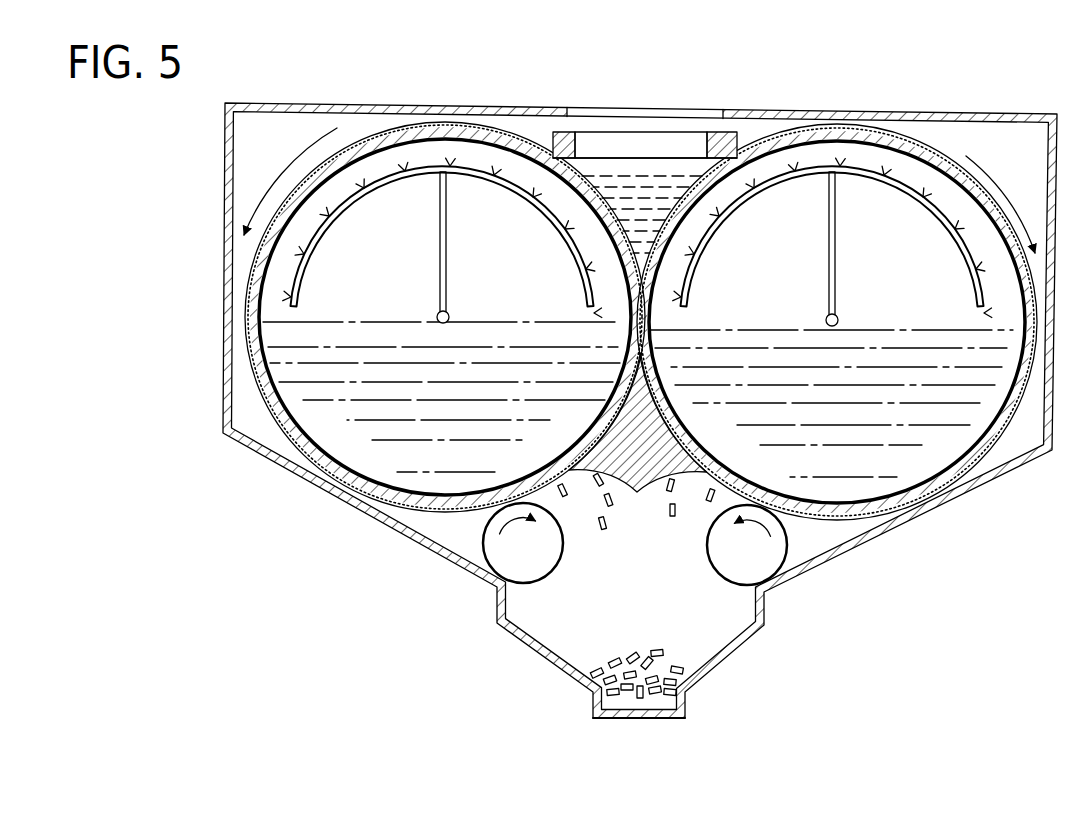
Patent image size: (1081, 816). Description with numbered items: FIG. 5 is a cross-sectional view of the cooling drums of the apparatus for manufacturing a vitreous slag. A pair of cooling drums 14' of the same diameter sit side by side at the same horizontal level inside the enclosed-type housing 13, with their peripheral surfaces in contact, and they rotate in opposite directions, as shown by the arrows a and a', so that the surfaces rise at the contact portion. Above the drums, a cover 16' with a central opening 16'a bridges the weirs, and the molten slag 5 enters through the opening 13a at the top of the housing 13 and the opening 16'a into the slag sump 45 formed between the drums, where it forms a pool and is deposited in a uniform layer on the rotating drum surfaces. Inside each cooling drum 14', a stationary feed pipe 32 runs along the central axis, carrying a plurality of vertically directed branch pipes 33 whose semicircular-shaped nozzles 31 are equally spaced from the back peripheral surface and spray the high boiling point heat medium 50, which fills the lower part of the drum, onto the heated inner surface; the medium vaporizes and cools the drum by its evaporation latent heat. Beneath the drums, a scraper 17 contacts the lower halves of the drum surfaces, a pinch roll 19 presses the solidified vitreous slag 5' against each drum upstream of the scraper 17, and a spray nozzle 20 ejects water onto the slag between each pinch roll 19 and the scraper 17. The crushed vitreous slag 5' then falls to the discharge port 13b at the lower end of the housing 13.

The enclosed-type housing 13 is at (316, 101).
The opening 13a is at (571, 106).
The discharge port 13b is at (668, 716).
The slag sump 45 is at (616, 178).
The molten slag 5 is at (642, 168).
The cover 16' is at (652, 111).
The opening of the cover 16'a is at (642, 117).
The semicircular-shaped nozzle 31 is at (347, 203).
The branch pipe 33 is at (440, 250).
The feed pipe for cooling medium 32 is at (449, 315).
The high boiling point heat medium 50 is at (385, 438).
The cooling drum 14' is at (641, 321).
The scraper 17 is at (645, 435).
The spray nozzle 20 is at (563, 497).
The pinch roll 19 is at (543, 578).
The vitreous slag 5' is at (636, 613).
The arrow indicating rotating direction a is at (1000, 204).
The arrow indicating rotating direction a' is at (290, 181).